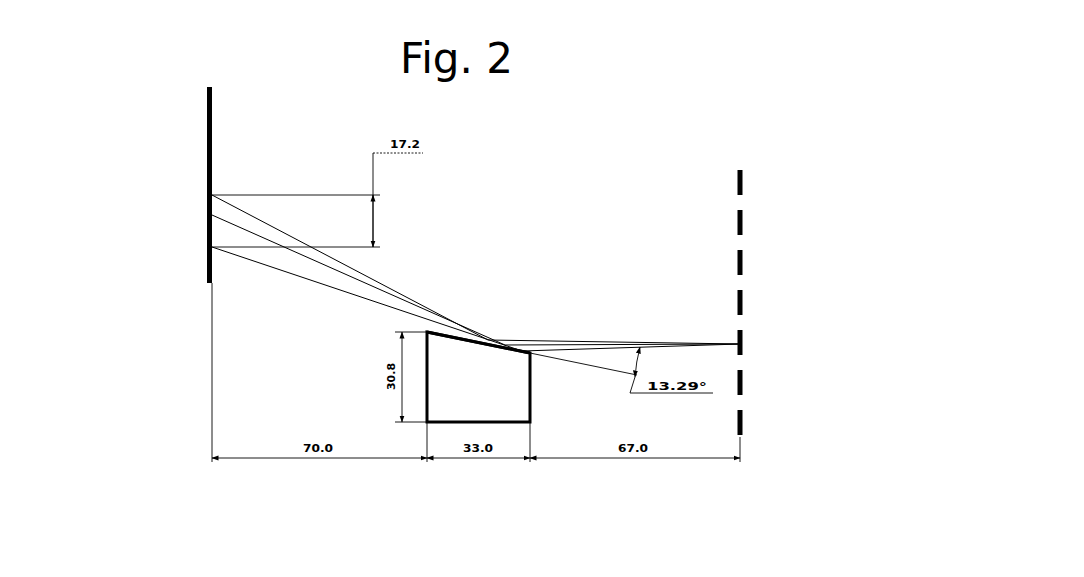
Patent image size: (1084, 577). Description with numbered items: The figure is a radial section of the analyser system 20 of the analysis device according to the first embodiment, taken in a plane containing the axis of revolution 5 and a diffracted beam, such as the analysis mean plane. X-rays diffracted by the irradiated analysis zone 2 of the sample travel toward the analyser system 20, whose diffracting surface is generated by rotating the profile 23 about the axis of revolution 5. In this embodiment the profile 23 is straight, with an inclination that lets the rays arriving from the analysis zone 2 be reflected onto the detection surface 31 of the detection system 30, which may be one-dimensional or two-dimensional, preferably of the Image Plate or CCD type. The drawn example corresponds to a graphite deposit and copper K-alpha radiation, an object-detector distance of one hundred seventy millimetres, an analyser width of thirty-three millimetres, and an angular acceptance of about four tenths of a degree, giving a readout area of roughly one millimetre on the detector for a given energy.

The analysis zone 2 is at (746, 343).
The axis of revolution 5 is at (744, 223).
The analyser system 20 is at (462, 402).
The profile 23 is at (487, 345).
The detection system 30 is at (198, 160).
The detection surface 31 is at (212, 117).